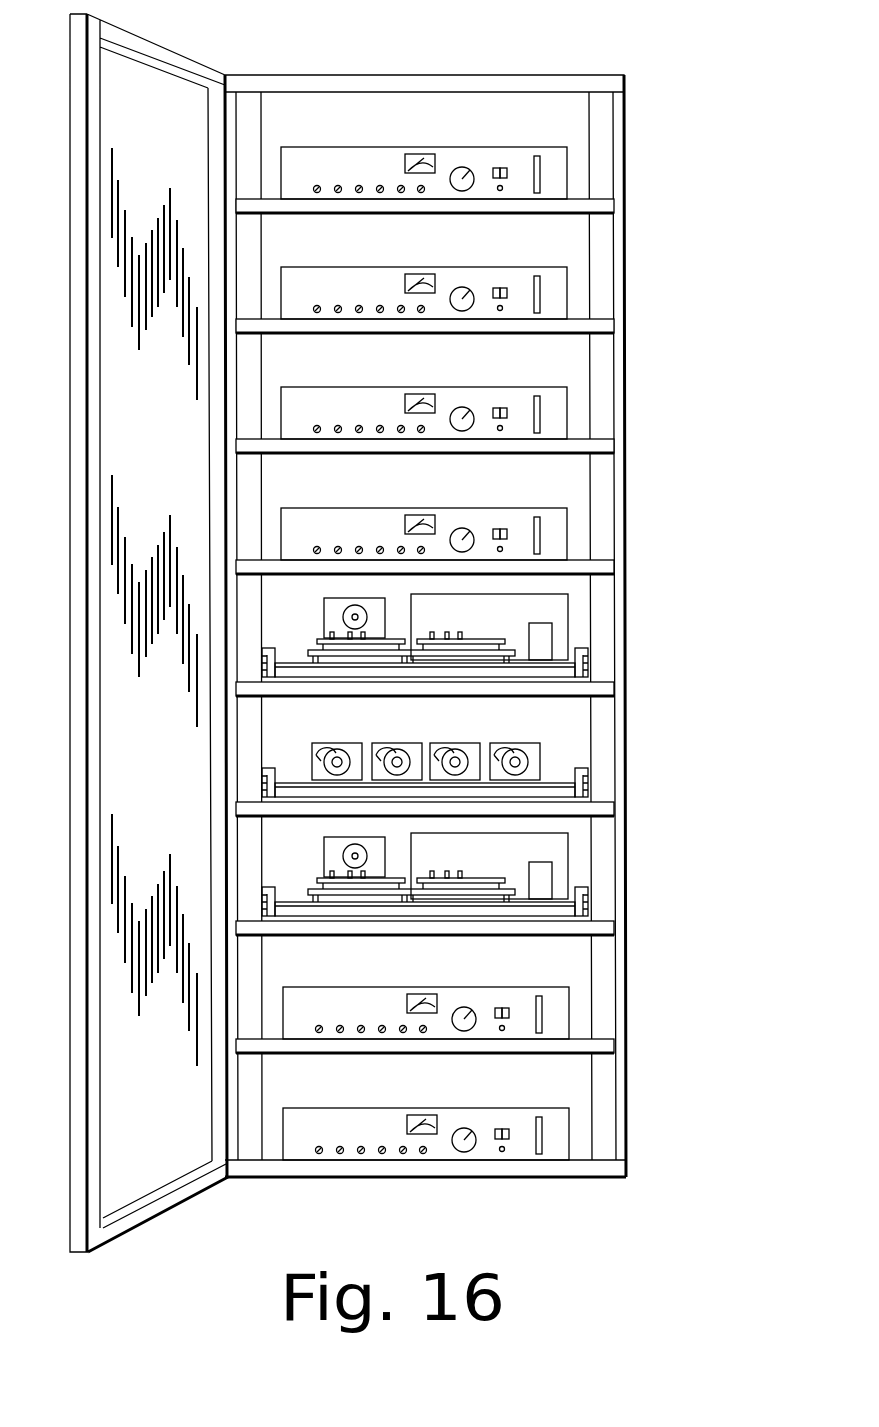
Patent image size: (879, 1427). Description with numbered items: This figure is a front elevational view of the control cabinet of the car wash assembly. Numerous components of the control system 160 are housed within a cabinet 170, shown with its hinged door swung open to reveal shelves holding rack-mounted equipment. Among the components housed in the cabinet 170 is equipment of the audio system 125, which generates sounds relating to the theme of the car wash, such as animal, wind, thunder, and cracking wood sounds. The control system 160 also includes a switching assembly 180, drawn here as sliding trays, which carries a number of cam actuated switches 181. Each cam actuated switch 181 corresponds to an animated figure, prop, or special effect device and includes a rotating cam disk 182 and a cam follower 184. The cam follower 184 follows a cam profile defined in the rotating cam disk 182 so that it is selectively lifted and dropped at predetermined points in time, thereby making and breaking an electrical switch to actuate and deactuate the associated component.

The control system 160 is at (405, 626).
The cabinet 170 is at (627, 83).
The audio system 125 is at (550, 493).
The switching assembly 180 is at (474, 742).
The cam actuated switch 181 is at (532, 753).
The rotating cam disk 182 is at (398, 753).
The cam follower 184 is at (322, 754).